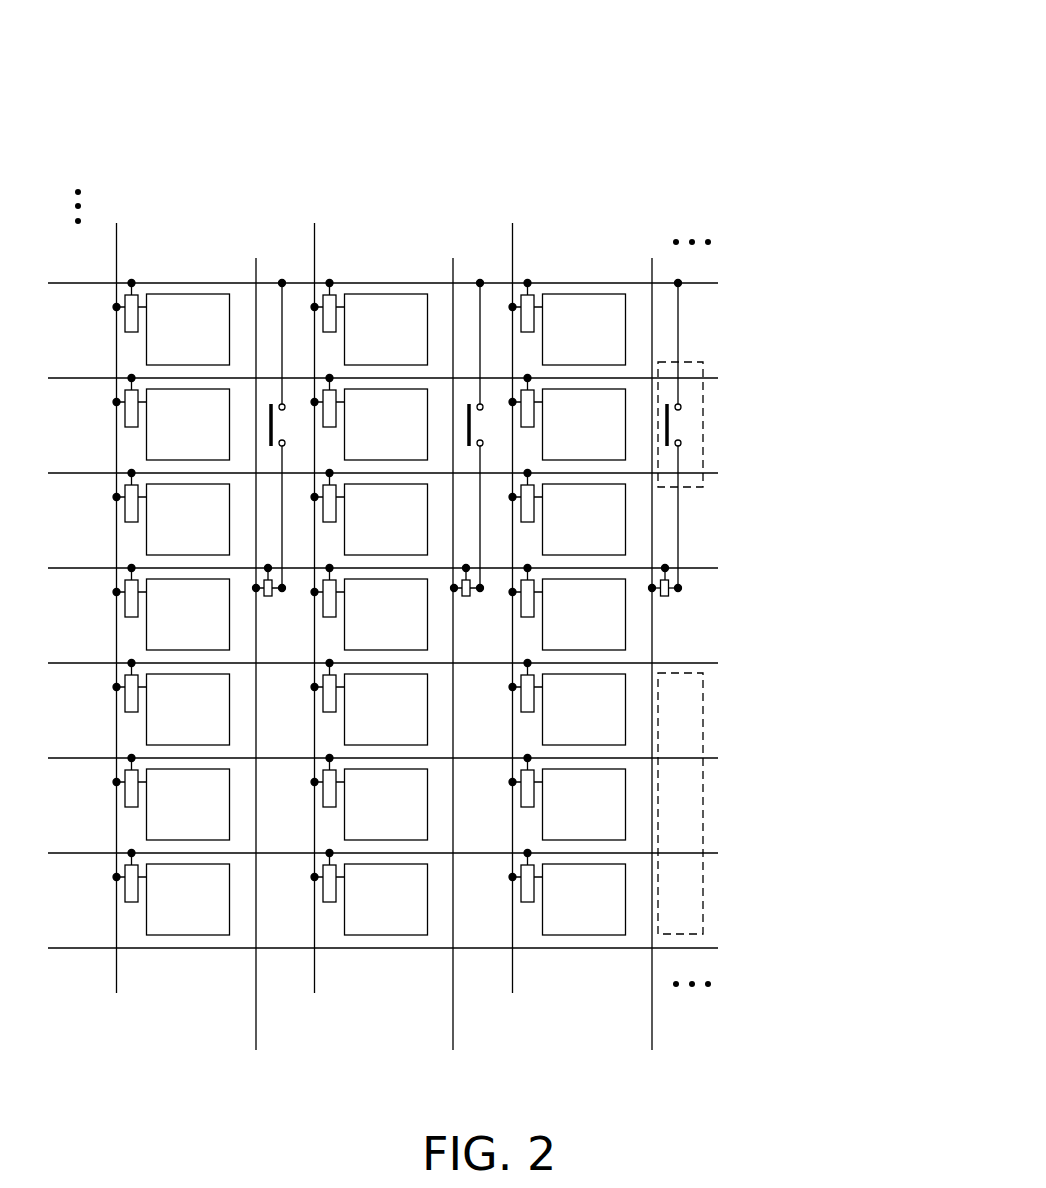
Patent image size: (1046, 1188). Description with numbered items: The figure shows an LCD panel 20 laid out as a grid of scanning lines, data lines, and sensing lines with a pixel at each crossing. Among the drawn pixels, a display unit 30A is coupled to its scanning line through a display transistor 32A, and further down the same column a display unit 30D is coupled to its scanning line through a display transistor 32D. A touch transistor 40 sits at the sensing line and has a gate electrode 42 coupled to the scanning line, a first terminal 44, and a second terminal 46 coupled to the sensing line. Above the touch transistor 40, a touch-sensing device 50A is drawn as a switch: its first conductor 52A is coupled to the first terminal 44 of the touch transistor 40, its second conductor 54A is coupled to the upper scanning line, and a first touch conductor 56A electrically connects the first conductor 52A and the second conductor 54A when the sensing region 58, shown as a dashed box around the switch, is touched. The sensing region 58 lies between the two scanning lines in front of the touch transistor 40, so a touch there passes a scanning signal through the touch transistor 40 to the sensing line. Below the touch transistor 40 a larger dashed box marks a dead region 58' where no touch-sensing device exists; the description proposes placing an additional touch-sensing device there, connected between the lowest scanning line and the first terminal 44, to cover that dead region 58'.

The LCD panel 20 is at (746, 84).
The display transistor 32A is at (541, 284).
The display unit 30A is at (600, 308).
The sensing region 58 is at (724, 407).
The second conductor 54A is at (688, 403).
The first touch conductor 56A is at (680, 426).
The first conductor 52A is at (690, 447).
The touch-sensing device 50A is at (781, 434).
The gate electrode 42 is at (679, 559).
The first terminal 44 is at (692, 590).
The second terminal 46 is at (721, 616).
The touch transistor 40 is at (749, 590).
The display unit 30D is at (610, 637).
The display transistor 32D is at (527, 617).
The dead region 58' is at (728, 803).